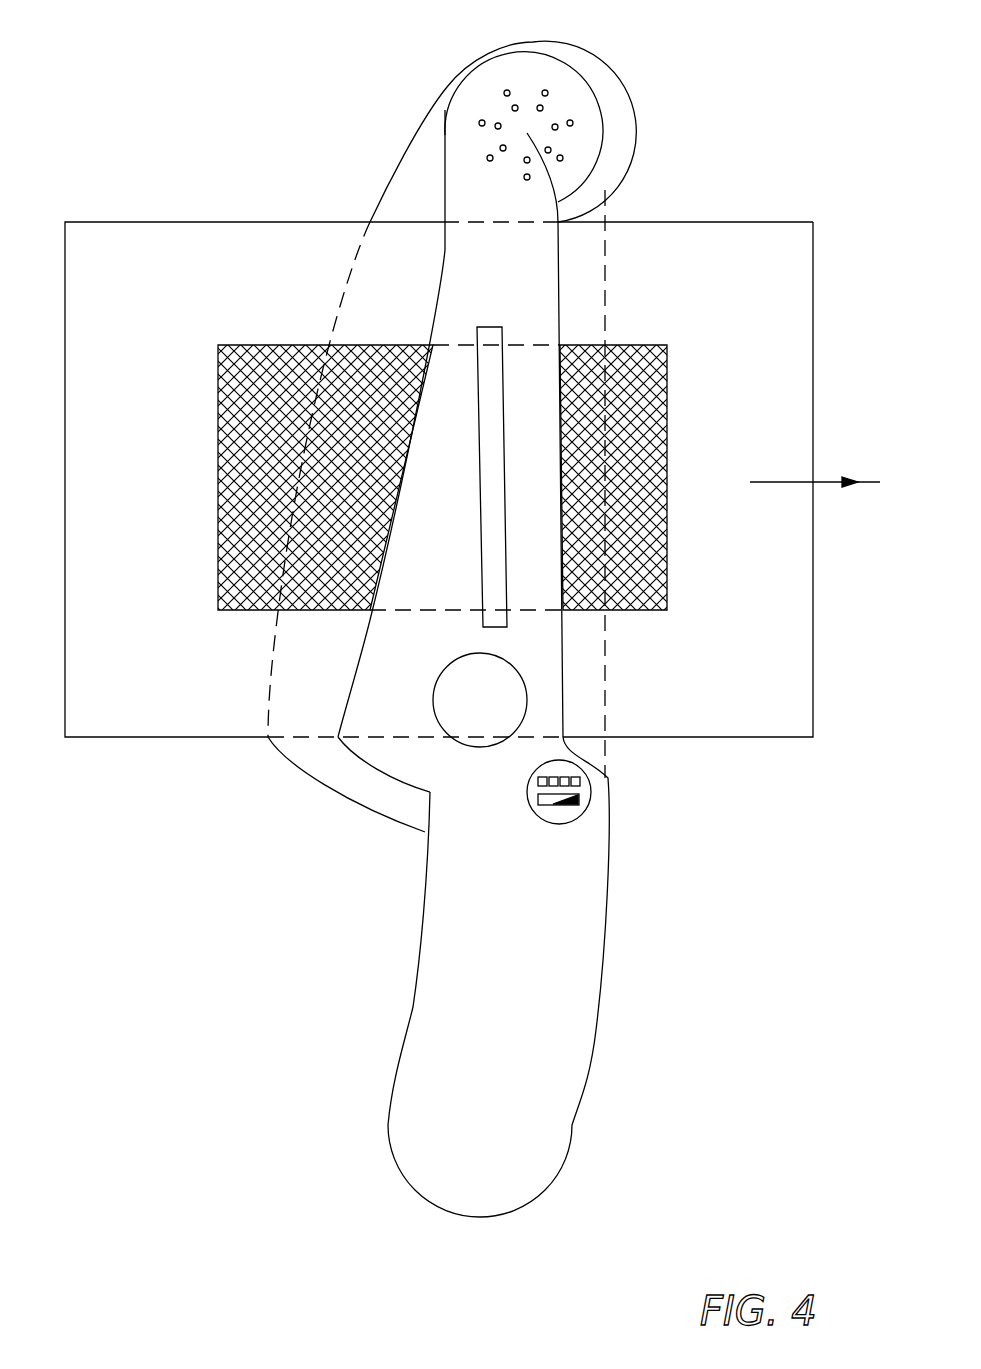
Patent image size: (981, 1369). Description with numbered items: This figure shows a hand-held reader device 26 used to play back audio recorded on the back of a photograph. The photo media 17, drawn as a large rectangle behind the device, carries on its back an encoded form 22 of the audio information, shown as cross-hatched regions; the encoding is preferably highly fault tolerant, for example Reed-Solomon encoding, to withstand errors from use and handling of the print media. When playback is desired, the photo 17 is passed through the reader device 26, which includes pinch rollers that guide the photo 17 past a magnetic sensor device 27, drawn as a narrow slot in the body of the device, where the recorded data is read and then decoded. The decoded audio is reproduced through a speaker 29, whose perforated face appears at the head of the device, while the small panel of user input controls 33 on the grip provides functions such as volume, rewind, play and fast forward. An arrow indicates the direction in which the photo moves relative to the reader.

The photo media 17 is at (167, 222).
The encoded form of the audio information 22 is at (632, 363).
The reader device 26 is at (600, 995).
The magnetic sensor device 27 is at (478, 543).
The speaker 29 is at (560, 105).
The user input controls 33 is at (540, 815).